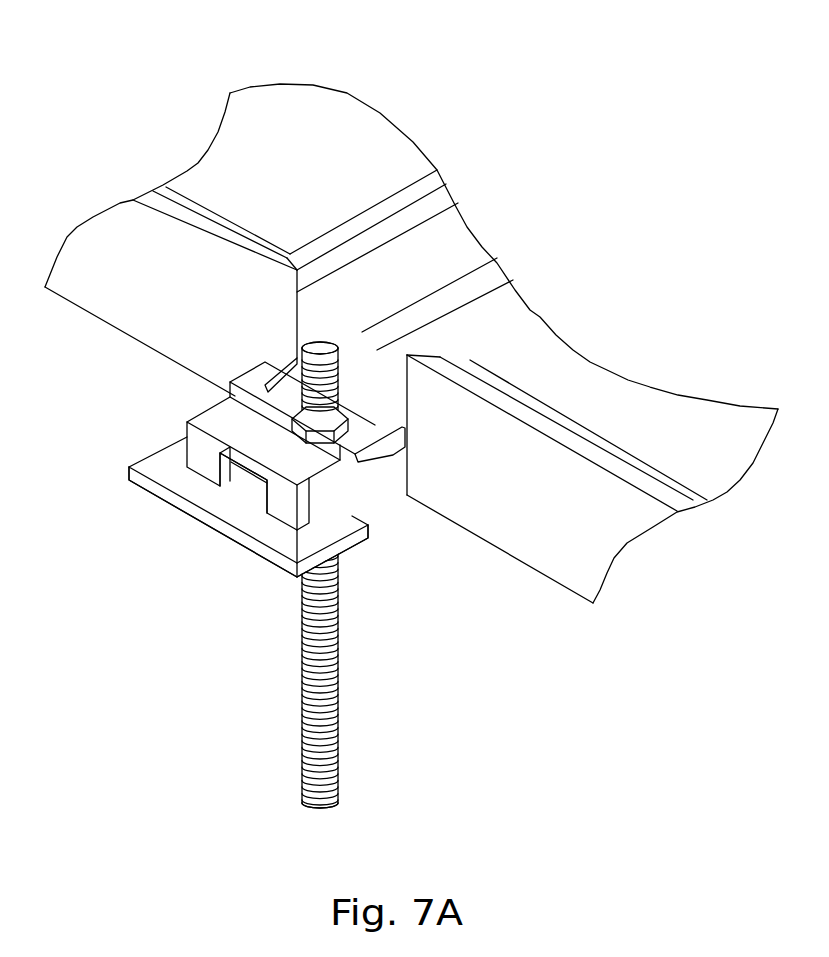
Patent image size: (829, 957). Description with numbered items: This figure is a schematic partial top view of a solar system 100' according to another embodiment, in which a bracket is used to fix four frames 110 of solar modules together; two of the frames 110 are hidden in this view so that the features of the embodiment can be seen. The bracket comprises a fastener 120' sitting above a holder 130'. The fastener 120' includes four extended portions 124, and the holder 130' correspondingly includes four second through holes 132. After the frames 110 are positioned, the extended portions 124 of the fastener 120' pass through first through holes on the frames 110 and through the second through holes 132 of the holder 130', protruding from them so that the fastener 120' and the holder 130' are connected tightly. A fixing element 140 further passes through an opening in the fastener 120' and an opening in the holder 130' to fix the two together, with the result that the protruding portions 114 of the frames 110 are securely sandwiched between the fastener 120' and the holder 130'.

The solar system 100' is at (201, 416).
The frame 110 is at (447, 243).
The protruding portion 114 is at (487, 275).
The fastener 120' is at (237, 446).
The extended portion 124 is at (208, 459).
The holder 130' is at (234, 525).
The second through hole 132 is at (310, 528).
The fixing element 140 is at (352, 698).